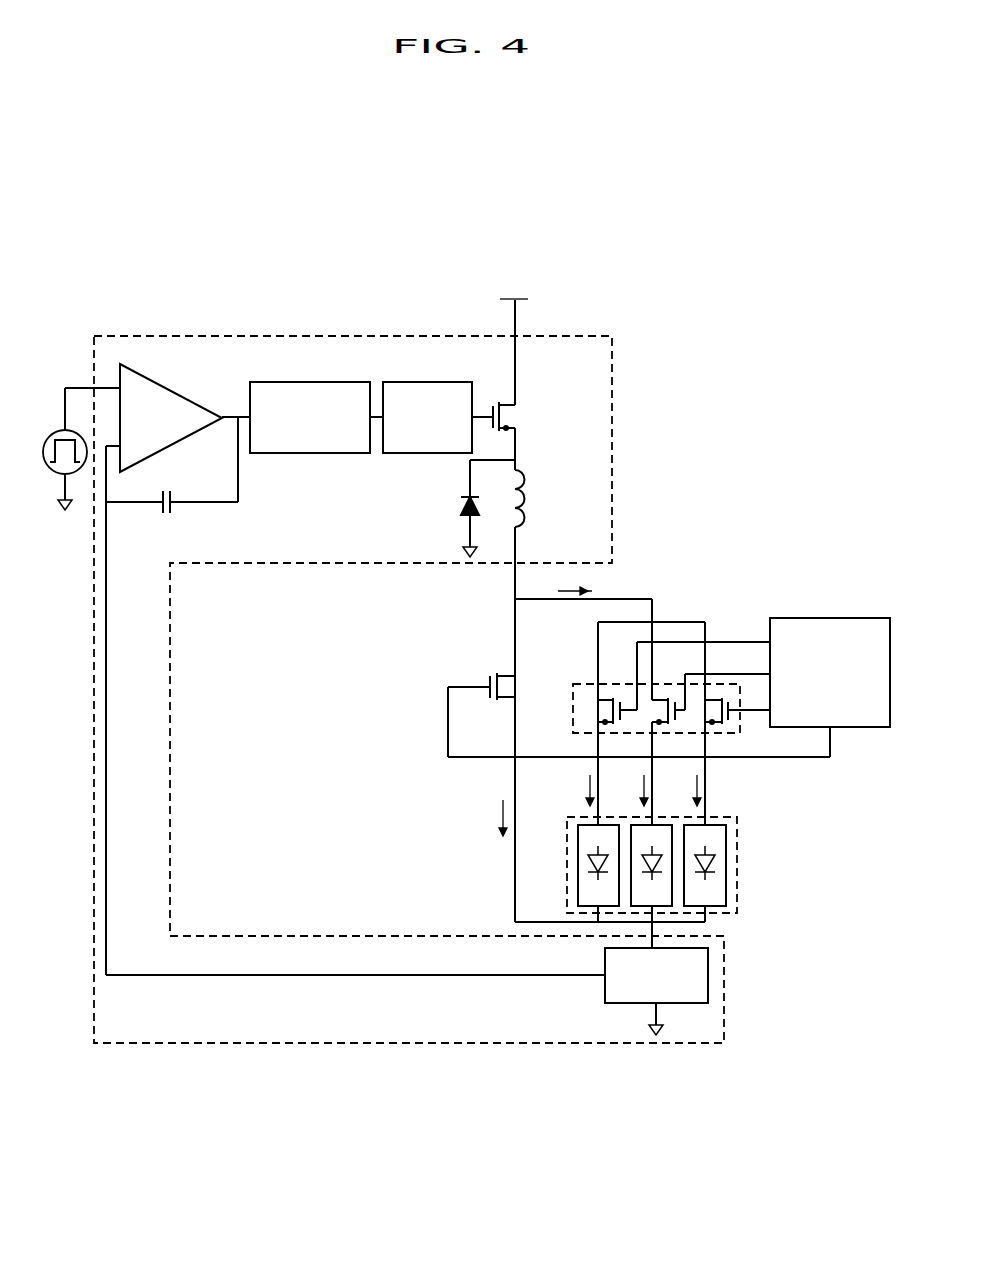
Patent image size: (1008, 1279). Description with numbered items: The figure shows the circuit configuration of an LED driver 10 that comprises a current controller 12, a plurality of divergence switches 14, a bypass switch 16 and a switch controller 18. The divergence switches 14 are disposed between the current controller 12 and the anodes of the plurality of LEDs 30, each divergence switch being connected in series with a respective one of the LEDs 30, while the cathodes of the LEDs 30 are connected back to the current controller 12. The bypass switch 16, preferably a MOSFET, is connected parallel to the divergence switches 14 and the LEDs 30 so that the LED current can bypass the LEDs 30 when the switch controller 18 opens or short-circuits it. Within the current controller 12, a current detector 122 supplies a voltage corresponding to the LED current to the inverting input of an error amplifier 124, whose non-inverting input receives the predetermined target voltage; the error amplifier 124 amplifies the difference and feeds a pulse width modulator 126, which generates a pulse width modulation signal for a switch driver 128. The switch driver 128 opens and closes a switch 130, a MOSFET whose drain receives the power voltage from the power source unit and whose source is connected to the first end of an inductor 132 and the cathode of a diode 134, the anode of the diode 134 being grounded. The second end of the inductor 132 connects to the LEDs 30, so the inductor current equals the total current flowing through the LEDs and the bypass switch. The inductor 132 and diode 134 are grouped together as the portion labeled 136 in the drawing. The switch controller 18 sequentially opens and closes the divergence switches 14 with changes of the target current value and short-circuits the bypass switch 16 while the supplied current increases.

The LED driver 10 is at (362, 224).
The current controller 12 is at (408, 1043).
The divergence switches 14 is at (573, 705).
The bypass switch 16 is at (507, 672).
The switch controller 18 is at (812, 618).
The LEDs 30 is at (567, 866).
The current detector 122 is at (708, 977).
The error amplifier 124 is at (152, 378).
The pulse width modulator 126 is at (336, 382).
The switch driver 128 is at (420, 382).
The switch 130 is at (509, 419).
The inductor 132 is at (521, 478).
The diode 134 is at (470, 508).
The energy storage unit 136 is at (402, 470).